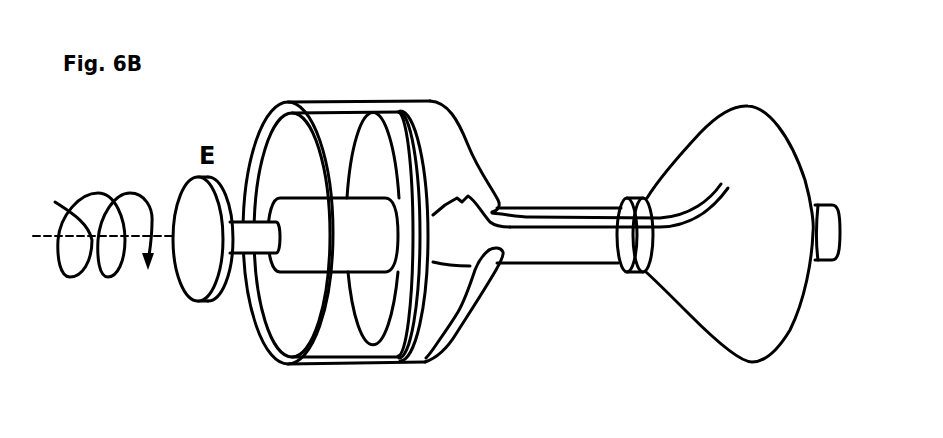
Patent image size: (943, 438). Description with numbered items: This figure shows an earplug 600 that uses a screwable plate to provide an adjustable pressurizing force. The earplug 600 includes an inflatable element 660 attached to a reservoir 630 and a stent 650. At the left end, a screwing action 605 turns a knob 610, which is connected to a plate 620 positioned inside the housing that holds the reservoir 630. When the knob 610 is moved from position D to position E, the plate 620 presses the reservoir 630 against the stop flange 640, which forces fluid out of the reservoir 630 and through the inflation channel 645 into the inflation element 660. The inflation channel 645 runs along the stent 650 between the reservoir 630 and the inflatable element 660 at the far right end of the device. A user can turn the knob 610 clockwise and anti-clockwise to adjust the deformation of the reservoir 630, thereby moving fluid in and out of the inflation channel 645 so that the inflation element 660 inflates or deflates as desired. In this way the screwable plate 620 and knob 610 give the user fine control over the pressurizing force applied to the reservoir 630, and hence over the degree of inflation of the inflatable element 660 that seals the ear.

The earplug 600 is at (522, 133).
The screwable motion 605 is at (114, 217).
The knob 610 is at (192, 256).
The plate 620 is at (380, 152).
The reservoir 630 is at (450, 290).
The stop flange 640 is at (425, 115).
The inflation channel 645 is at (535, 219).
The stent 650 is at (558, 205).
The inflatable element 660 is at (748, 135).